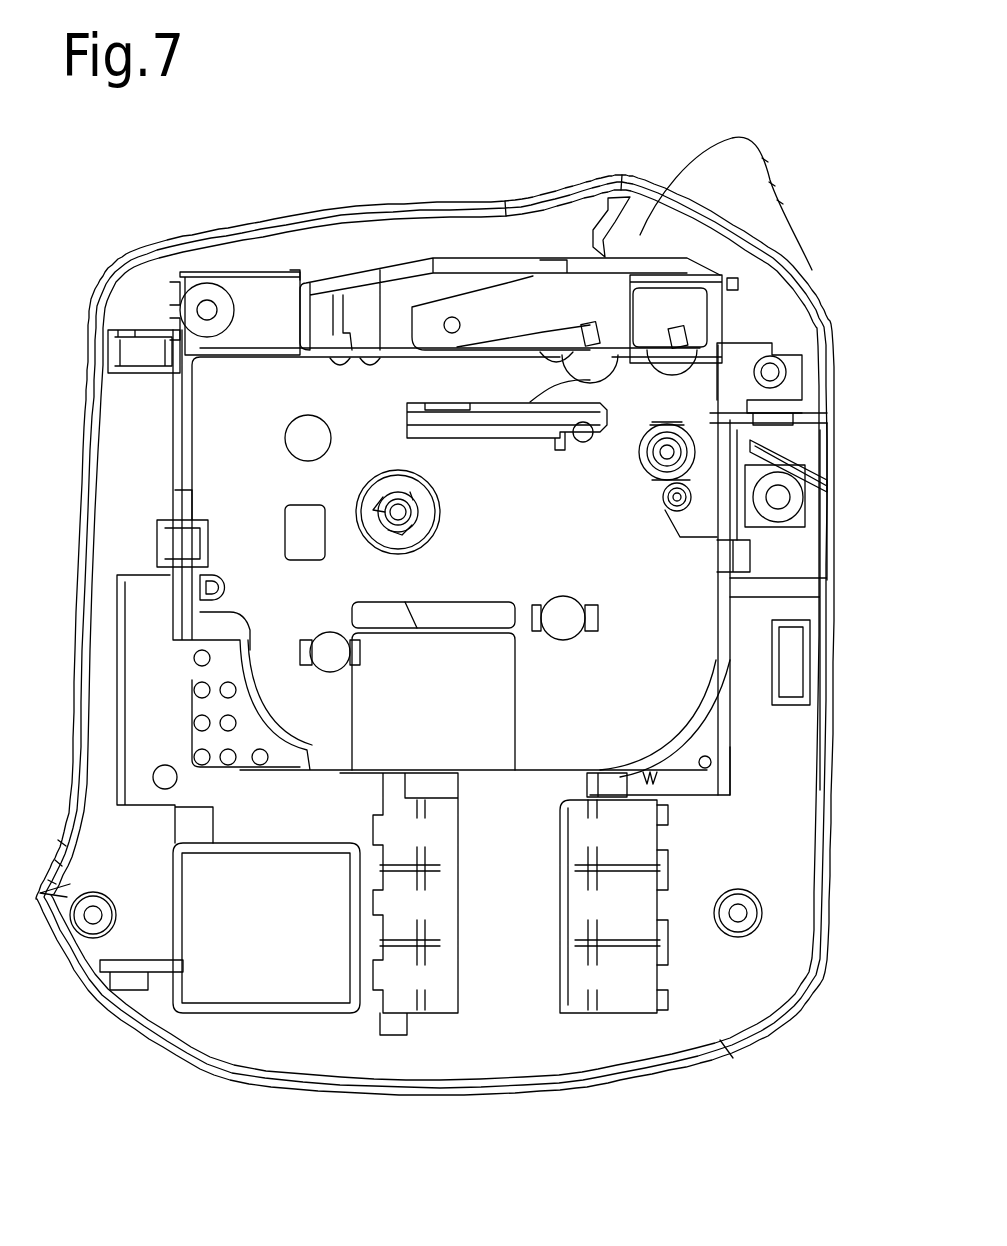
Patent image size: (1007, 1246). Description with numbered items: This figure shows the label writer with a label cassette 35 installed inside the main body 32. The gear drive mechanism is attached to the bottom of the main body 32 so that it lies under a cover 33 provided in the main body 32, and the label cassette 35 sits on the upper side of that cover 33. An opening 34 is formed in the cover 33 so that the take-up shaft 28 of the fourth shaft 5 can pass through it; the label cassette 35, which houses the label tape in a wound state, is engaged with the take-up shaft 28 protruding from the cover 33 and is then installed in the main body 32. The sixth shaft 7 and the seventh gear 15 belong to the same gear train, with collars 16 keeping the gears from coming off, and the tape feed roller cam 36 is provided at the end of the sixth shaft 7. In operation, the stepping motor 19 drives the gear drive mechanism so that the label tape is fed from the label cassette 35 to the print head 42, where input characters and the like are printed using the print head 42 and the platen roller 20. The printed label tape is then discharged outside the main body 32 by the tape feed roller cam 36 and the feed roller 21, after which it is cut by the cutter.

The fourth shaft 5 is at (408, 515).
The sixth shaft 7 is at (703, 490).
The seventh gear 15 is at (703, 380).
The collar 16 is at (577, 403).
The stepping motor 19 is at (722, 687).
The platen roller 20 is at (600, 403).
The feed roller 21 is at (770, 213).
The take-up shaft 28 is at (418, 513).
The main body 32 is at (424, 198).
The cover 33 is at (235, 355).
The opening 34 is at (440, 497).
The label cassette 35 is at (673, 727).
The tape feed roller cam 36 is at (672, 427).
The print head 42 is at (537, 403).